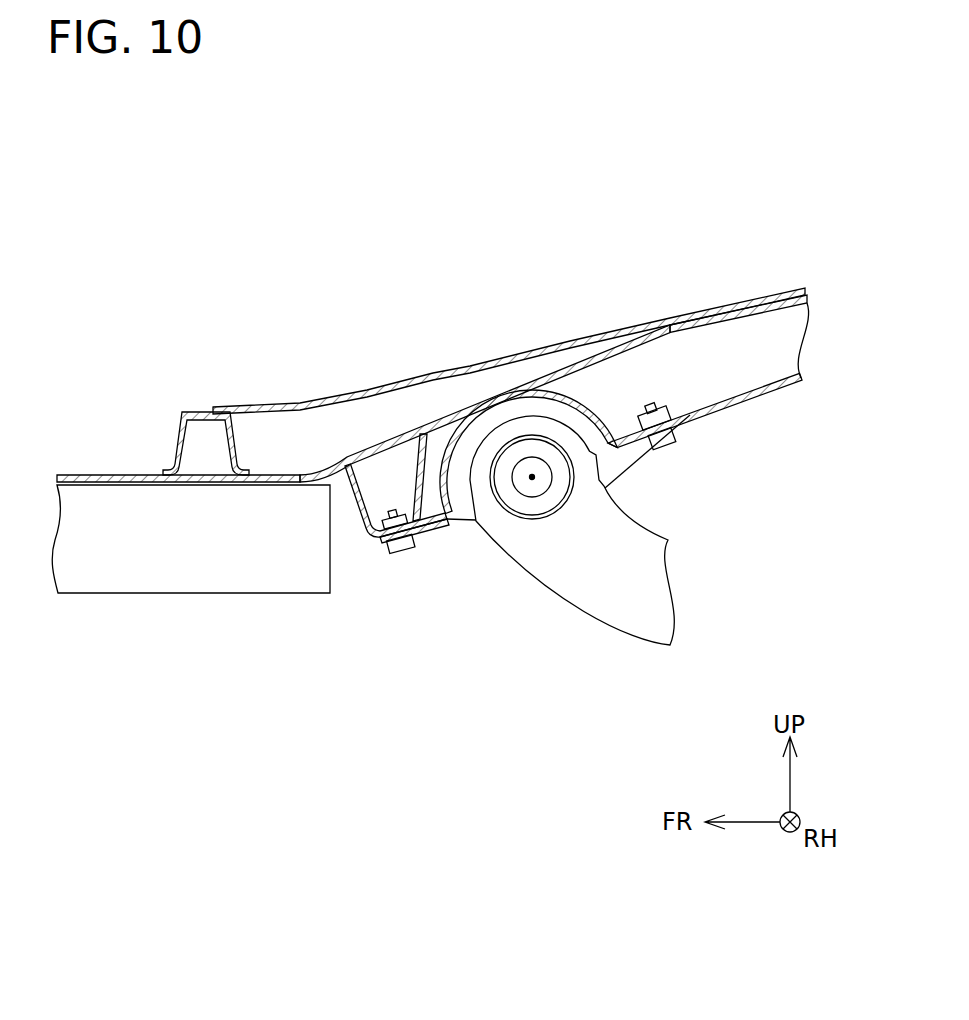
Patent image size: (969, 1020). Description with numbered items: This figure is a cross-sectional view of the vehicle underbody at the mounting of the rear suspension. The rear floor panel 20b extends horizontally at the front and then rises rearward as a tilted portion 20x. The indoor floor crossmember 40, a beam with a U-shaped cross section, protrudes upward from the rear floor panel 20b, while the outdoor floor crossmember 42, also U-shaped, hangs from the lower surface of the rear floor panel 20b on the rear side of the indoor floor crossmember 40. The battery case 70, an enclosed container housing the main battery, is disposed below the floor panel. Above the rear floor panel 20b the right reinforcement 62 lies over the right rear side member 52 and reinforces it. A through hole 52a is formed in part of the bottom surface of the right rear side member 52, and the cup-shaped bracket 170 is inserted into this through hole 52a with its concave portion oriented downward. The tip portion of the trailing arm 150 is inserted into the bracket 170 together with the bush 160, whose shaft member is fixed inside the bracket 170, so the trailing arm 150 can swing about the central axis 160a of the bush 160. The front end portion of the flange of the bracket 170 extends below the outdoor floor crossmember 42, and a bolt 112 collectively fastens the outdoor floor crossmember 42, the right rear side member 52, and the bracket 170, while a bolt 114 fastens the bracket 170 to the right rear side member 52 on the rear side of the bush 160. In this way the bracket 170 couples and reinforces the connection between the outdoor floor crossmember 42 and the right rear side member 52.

The rear floor panel 20b is at (90, 473).
The tilted portion 20x is at (643, 347).
The indoor floor crossmember 40 is at (206, 412).
The outdoor floor crossmember 42 is at (362, 514).
The right rear side member 52 is at (742, 399).
The through hole 52a is at (605, 490).
The right reinforcement 62 is at (410, 380).
The battery case 70 is at (220, 580).
The bolt 112 is at (402, 553).
The bolt 114 is at (663, 437).
The trailing arm 150 is at (600, 597).
The bush 160 is at (542, 504).
The central axis 160a is at (530, 480).
The bracket 170 is at (455, 470).